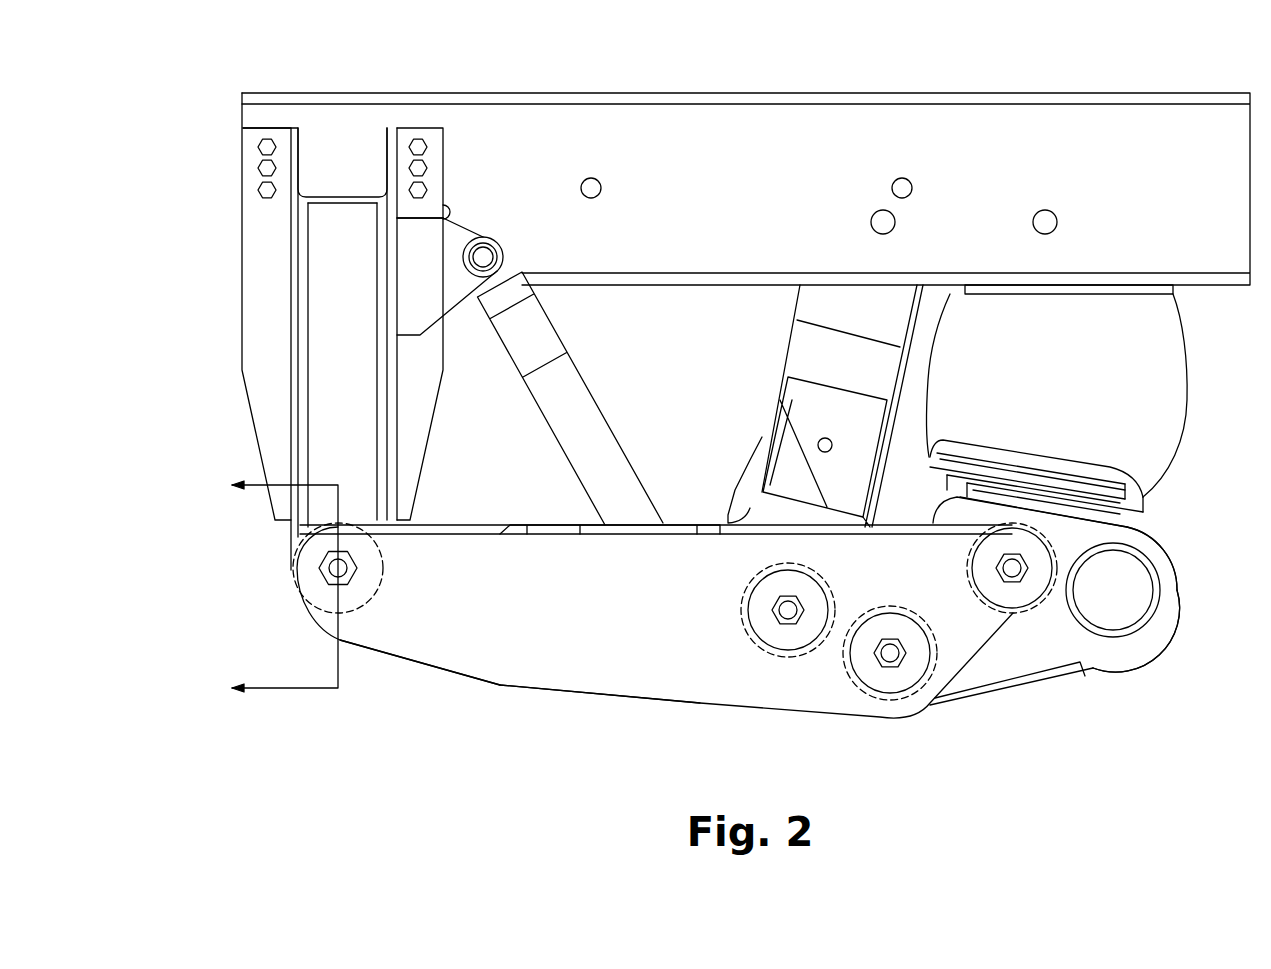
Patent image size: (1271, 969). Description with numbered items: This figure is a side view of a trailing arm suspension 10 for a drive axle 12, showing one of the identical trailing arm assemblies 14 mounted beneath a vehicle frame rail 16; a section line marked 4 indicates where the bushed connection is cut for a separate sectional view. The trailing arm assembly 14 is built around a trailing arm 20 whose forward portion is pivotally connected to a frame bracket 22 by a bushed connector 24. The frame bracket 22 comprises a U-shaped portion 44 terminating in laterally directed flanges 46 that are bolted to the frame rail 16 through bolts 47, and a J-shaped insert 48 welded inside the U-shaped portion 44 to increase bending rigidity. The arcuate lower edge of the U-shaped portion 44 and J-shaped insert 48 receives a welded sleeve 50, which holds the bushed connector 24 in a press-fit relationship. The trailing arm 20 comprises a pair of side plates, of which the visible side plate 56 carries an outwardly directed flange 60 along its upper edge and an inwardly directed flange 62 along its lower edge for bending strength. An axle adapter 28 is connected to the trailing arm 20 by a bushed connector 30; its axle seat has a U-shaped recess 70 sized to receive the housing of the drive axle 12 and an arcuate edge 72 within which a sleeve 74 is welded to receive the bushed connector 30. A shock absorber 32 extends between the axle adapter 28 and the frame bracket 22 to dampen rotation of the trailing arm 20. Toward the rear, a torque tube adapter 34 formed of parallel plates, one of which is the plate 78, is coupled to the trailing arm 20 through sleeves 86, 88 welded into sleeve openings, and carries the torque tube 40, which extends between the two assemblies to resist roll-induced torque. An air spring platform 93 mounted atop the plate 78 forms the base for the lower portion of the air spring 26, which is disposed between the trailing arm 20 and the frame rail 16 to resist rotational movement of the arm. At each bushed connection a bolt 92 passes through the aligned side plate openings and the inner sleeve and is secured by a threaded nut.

The trailing arm suspension 10 is at (556, 45).
The drive axle 12 is at (927, 298).
The trailing arm assembly 14 is at (252, 445).
The vehicle frame rail 16 is at (792, 93).
The trailing arm 20 is at (590, 697).
The frame bracket 22 is at (240, 291).
The bushed connector 24 is at (323, 580).
The air spring 26 is at (1185, 353).
The axle adapter 28 is at (887, 482).
The bushed connector 30 is at (788, 623).
The shock absorber 32 is at (552, 433).
The torque tube adapter 34 is at (1177, 590).
The torque tube 40 is at (1153, 567).
The U-shaped portion 44 is at (398, 128).
The laterally directed flanges 46 is at (260, 128).
The bolts 47 is at (258, 185).
The J-shaped insert 48 is at (340, 152).
The sleeve 50 is at (295, 569).
The side plate 56 is at (427, 665).
The outwardly directed flange 60 is at (547, 522).
The inwardly directed flange 62 is at (520, 688).
The U-shaped recess 70 is at (781, 400).
The arcuate edge 72 is at (750, 600).
The sleeve 74 is at (813, 650).
The parallel plate 78 is at (1163, 635).
The sleeve 86 is at (930, 700).
The sleeve 88 is at (1013, 600).
The bolt 92 is at (340, 582).
The air spring platform 93 is at (1147, 505).
The section line 4- 4 is at (285, 586).